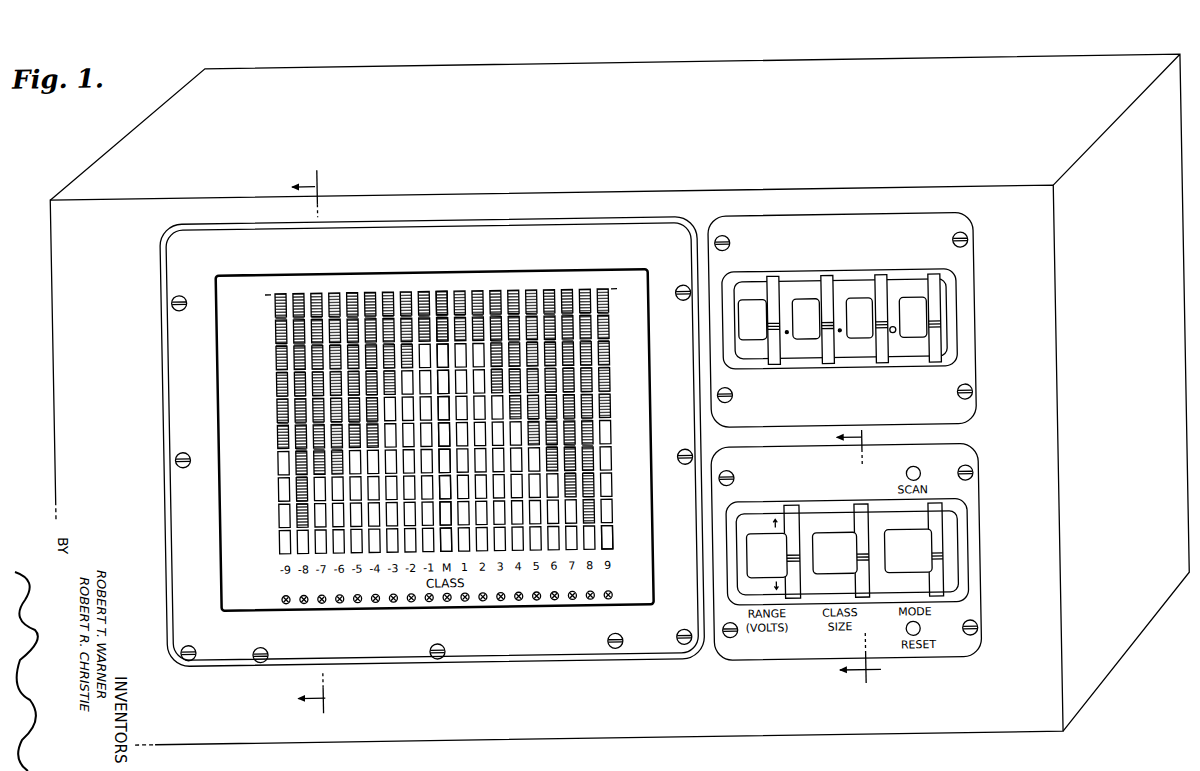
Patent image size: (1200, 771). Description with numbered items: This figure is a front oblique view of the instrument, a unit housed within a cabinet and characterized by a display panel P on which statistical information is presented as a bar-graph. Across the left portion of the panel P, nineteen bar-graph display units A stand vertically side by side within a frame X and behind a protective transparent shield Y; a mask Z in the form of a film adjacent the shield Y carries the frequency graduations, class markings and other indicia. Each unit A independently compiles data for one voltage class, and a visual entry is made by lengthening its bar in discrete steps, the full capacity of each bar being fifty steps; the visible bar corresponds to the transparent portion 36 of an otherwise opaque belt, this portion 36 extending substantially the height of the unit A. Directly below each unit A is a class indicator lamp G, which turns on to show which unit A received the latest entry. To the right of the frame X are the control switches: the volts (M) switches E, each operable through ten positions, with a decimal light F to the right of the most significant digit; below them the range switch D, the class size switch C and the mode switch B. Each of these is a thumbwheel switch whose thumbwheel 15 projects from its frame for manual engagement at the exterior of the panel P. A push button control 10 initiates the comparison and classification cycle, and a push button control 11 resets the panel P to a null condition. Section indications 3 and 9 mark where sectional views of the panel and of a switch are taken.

The display panel P is at (537, 176).
The frame X is at (172, 256).
The protective transparent shield Y is at (236, 603).
The mask Z is at (241, 537).
The bar-graph display unit A is at (374, 288).
The transparent portion of the belt 36 is at (446, 335).
The class indicator lamp G is at (497, 605).
The section line 3- 3 is at (319, 437).
The section line 9- 9 is at (869, 554).
The volts (M) switch E is at (841, 262).
The thumbwheel 15 is at (938, 303).
The decimal light F is at (895, 338).
The range switch D is at (766, 499).
The class size switch C is at (836, 520).
The mode switch B is at (940, 545).
The push button control 10 is at (918, 471).
The push button control 11 is at (916, 628).